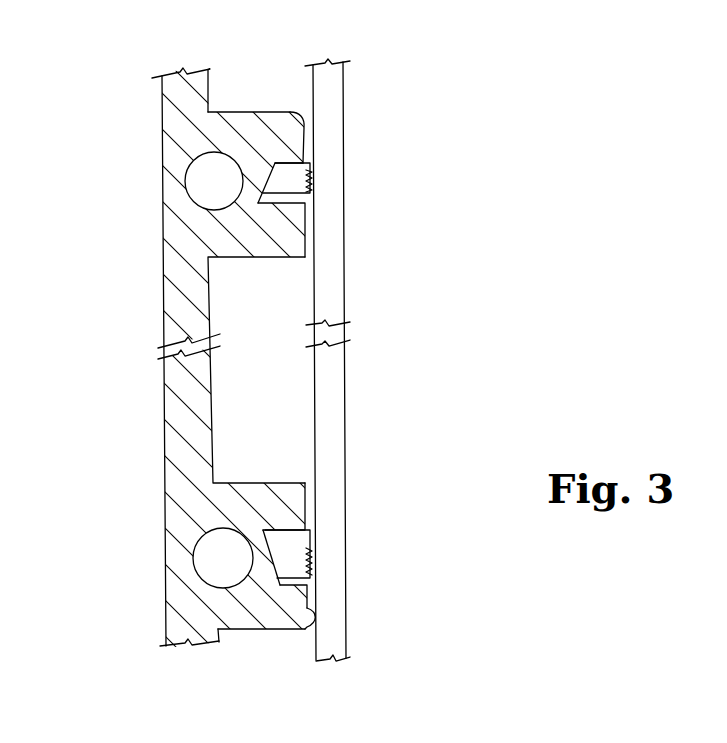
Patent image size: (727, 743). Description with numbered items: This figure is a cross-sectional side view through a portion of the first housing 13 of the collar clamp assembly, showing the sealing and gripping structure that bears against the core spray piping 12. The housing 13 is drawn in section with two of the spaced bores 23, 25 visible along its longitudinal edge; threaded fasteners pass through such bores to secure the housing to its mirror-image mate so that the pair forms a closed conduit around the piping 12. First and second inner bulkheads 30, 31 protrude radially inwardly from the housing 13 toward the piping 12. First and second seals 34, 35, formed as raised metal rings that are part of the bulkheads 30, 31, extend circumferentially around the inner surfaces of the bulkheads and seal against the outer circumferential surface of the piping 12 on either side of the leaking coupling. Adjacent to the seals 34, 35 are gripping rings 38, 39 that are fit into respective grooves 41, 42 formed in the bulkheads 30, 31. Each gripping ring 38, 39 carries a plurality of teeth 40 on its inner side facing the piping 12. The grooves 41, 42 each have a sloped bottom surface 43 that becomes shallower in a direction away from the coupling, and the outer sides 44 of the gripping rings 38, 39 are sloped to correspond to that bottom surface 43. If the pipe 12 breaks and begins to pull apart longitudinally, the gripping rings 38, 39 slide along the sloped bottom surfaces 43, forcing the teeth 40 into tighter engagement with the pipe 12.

The core spray piping 12 is at (333, 453).
The first housing 13 is at (187, 425).
The bore 23 is at (198, 177).
The bore 25 is at (212, 545).
The first inner bulkhead 30 is at (245, 112).
The second inner bulkhead 31 is at (260, 608).
The first seal 34 is at (303, 112).
The second seal 35 is at (312, 628).
The gripping ring 38 is at (293, 178).
The gripping ring 39 is at (293, 558).
The teeth 40 is at (314, 183).
The groove 41 is at (285, 200).
The groove 42 is at (288, 538).
The sloped bottom surface 43 is at (262, 200).
The outer side 44 is at (270, 184).